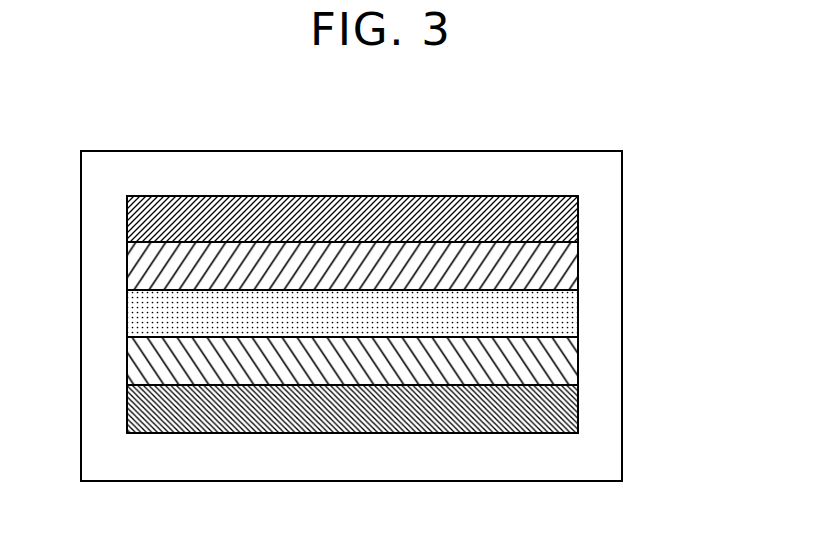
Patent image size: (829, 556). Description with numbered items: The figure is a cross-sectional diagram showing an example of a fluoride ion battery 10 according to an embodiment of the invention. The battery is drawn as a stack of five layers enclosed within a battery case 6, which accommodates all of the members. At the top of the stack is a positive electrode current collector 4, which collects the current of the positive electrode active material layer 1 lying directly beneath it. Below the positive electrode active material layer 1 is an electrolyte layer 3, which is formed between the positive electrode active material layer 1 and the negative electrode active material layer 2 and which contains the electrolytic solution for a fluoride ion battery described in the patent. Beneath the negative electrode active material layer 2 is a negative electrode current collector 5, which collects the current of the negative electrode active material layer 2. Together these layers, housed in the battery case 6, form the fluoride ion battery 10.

The fluoride ion battery 10 is at (601, 118).
The battery case 6 is at (592, 183).
The positive electrode current collector 4 is at (578, 222).
The positive electrode active material layer 1 is at (545, 275).
The electrolyte layer 3 is at (545, 322).
The negative electrode active material layer 2 is at (545, 370).
The negative electrode current collector 5 is at (545, 417).